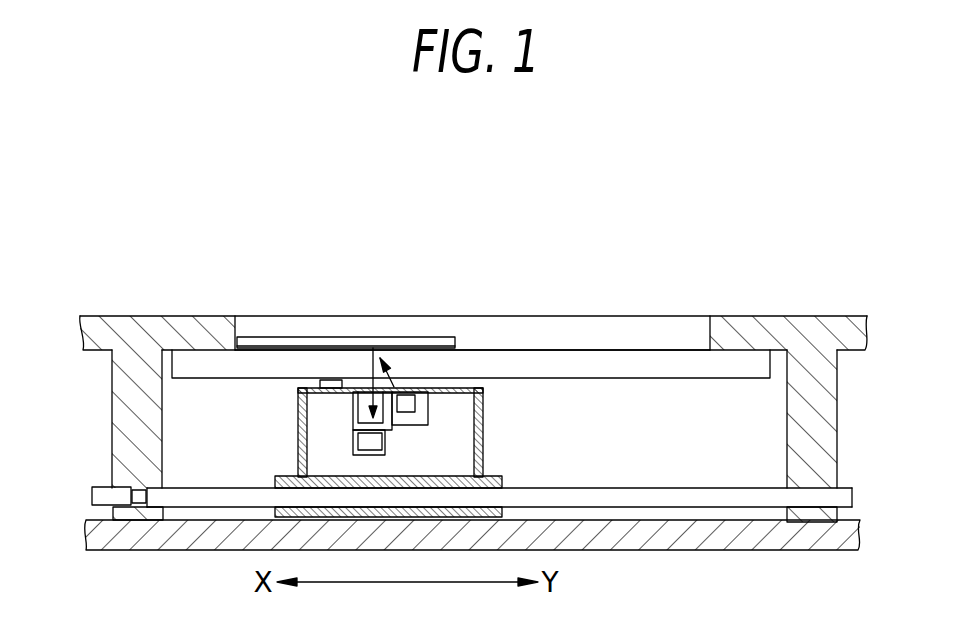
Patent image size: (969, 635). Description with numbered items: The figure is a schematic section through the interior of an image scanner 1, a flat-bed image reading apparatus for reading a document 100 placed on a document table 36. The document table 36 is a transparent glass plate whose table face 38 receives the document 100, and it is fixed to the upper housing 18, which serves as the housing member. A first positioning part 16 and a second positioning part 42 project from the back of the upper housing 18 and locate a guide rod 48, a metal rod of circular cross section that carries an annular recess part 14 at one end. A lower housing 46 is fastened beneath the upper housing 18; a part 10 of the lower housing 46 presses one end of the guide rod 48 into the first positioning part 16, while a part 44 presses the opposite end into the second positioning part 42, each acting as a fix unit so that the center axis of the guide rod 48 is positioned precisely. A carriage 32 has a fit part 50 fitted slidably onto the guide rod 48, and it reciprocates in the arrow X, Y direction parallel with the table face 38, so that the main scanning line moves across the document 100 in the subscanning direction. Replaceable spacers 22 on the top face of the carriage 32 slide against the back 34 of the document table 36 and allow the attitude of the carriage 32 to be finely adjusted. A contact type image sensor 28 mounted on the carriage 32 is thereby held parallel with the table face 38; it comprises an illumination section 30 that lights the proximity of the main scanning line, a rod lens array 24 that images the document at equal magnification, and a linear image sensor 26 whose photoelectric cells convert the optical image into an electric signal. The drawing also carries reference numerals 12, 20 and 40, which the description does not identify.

The image scanner 1 is at (718, 240).
The part surrounded by the first rib of the lower housing 10 is at (161, 487).
The bearing block 12 is at (128, 498).
The annular recess part 14 is at (140, 488).
The first positioning part 16 is at (128, 398).
The upper housing 18 is at (147, 327).
The scale plate 20 is at (252, 328).
The replaceable spacers 22 is at (328, 378).
The rod lens array 24 is at (353, 405).
The linear image sensor 26 is at (355, 435).
The contact type image sensor 28 is at (411, 441).
The illumination section 30 is at (412, 407).
The carriage 32 is at (482, 406).
The back 34 is at (564, 392).
The document table 36 is at (493, 368).
The table face 38 is at (512, 331).
The top cover 40 is at (631, 330).
The second positioning part 42 is at (805, 408).
The part surrounded by the second rib of the lower housing 44 is at (838, 484).
The lower housing 46 is at (810, 534).
The guide rod 48 is at (718, 498).
The fit part 50 is at (390, 503).
The document 100 is at (397, 348).